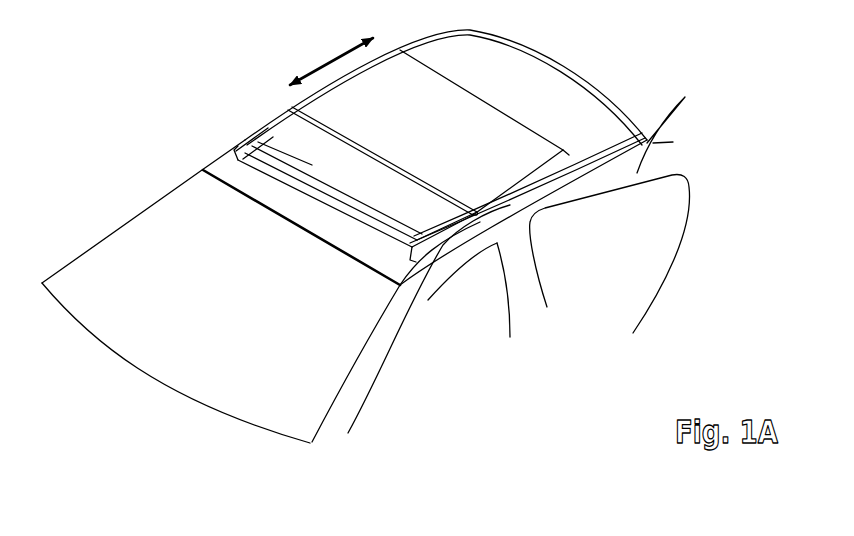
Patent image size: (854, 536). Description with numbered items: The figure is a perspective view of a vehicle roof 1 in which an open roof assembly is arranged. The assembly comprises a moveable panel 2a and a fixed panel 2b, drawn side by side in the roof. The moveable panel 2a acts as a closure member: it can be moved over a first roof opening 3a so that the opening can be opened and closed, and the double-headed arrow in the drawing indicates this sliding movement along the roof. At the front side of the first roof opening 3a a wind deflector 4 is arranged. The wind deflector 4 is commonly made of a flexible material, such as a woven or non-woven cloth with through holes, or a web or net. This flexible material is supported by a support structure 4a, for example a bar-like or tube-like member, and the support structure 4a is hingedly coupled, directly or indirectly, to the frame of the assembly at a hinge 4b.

The vehicle roof 1 is at (685, 97).
The moveable panel 2a is at (438, 127).
The fixed panel 2b is at (545, 101).
The first roof opening 3a is at (301, 157).
The wind deflector 4 is at (257, 172).
The support structure 4a is at (378, 228).
The hinge 4b is at (257, 124).